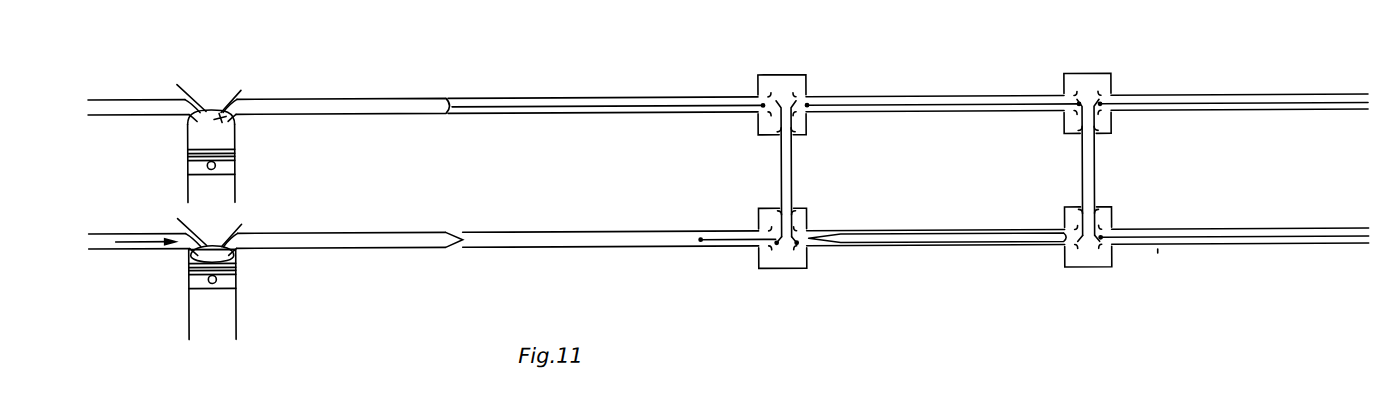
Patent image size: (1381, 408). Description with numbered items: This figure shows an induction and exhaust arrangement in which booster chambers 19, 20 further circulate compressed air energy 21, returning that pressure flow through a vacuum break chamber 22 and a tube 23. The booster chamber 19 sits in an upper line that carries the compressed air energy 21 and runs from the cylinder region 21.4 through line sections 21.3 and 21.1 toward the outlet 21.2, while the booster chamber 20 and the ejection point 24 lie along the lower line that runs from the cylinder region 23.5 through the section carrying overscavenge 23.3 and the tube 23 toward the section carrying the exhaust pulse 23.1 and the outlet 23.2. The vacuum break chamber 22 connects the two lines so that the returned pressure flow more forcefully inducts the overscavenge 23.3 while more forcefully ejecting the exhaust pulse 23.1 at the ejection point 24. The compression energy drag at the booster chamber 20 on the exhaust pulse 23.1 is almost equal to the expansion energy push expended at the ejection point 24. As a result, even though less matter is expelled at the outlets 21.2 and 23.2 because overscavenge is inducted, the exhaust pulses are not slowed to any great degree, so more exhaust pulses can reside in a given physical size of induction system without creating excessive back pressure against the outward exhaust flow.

The booster chamber 19 is at (1113, 75).
The booster chamber 20 is at (1088, 178).
The compressed air energy 21 is at (493, 99).
The fuel line section 21.1 is at (900, 97).
The expulsion point 21.2 is at (1210, 98).
The fuel line section 21.3 is at (338, 94).
The cylinder with piston 21.4 is at (168, 166).
The vacuum break chamber 22 is at (787, 163).
The tube 23 is at (540, 230).
The exhaust pulse 23.1 is at (927, 234).
The expulsion point 23.2 is at (1210, 233).
The overscavenge 23.3 is at (370, 231).
The cylinder with piston 23.5 is at (168, 300).
The ejection point 24 is at (815, 231).